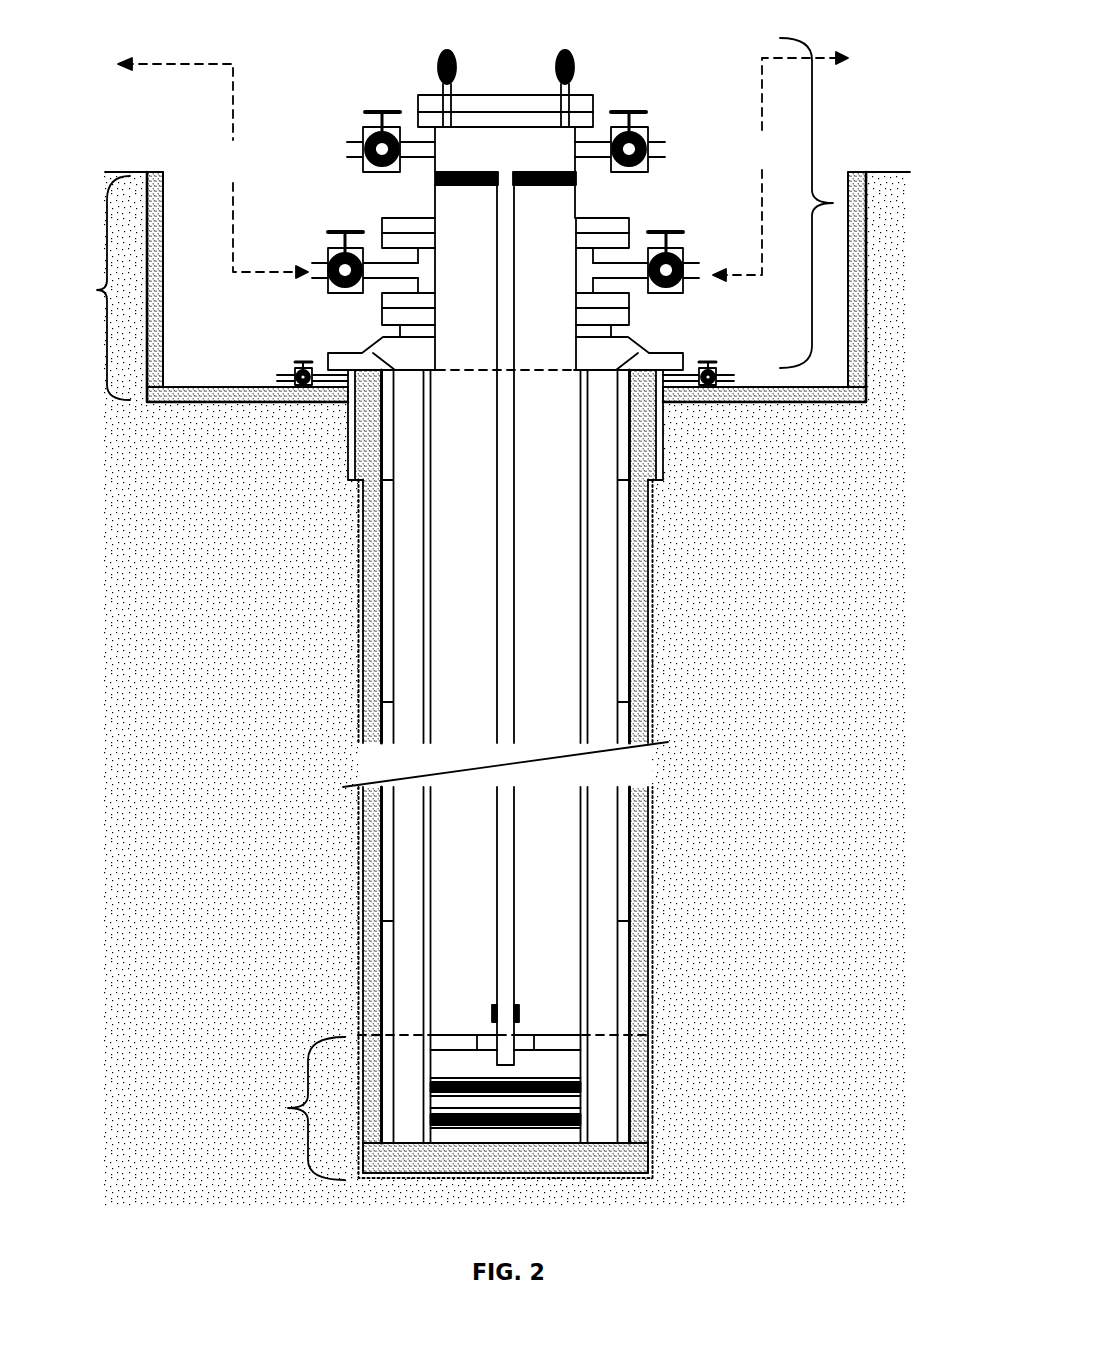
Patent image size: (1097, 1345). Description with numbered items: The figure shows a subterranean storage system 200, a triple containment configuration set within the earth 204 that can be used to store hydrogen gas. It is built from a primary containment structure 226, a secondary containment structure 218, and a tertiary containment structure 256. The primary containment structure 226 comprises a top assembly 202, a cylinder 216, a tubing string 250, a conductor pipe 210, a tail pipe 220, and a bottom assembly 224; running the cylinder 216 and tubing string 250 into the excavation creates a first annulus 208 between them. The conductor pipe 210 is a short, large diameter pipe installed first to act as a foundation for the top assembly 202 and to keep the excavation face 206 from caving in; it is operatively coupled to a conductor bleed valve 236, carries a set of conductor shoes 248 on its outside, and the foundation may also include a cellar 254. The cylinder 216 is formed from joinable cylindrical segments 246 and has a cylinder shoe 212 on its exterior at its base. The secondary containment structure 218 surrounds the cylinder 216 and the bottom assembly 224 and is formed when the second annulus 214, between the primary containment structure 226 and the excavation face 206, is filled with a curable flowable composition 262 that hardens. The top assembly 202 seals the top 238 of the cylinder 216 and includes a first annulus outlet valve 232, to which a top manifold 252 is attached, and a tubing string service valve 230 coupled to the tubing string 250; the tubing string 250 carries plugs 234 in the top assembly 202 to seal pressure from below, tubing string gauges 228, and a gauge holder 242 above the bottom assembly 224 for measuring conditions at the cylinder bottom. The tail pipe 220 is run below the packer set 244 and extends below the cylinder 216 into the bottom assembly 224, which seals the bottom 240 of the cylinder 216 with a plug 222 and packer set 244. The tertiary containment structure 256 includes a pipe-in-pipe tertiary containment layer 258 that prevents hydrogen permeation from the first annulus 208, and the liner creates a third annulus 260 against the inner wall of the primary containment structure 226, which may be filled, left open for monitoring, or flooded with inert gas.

The subterranean storage system 200 is at (872, 72).
The top assembly 202 is at (833, 203).
The earth 204 is at (897, 478).
The excavation face 206 is at (653, 713).
The first annulus 208 is at (474, 433).
The conductor pipe 210 is at (348, 418).
The cylinder shoe 212 is at (381, 1134).
The second annulus 214 is at (343, 787).
The cylinder 216 is at (380, 643).
The secondary containment structure 218 is at (363, 488).
The tail pipe 220 is at (517, 1058).
The plug 222 is at (580, 1117).
The bottom assembly 224 is at (288, 1108).
The primary containment structure 226 is at (381, 597).
The tubing string gauges 228 is at (438, 60).
The tubing string service valve 230 is at (368, 135).
The first annulus outlet valve 232 is at (338, 248).
The plugs 234 is at (462, 190).
The conductor bleed valve 236 is at (298, 362).
The top 238 is at (440, 370).
The bottom 240 is at (353, 1035).
The gauge holder 242 is at (519, 1012).
The packer set 244 is at (562, 1040).
The joinable cylindrical segments 246 is at (394, 508).
The conductor shoes 248 is at (350, 470).
The tubing string 250 is at (497, 692).
The top manifold 252 is at (250, 177).
The cellar 254 is at (85, 288).
The tertiary containment structure 256 is at (393, 813).
The tertiary containment layer 258 is at (430, 512).
The third annulus 260 is at (400, 862).
The flowable composition 262 is at (512, 1160).